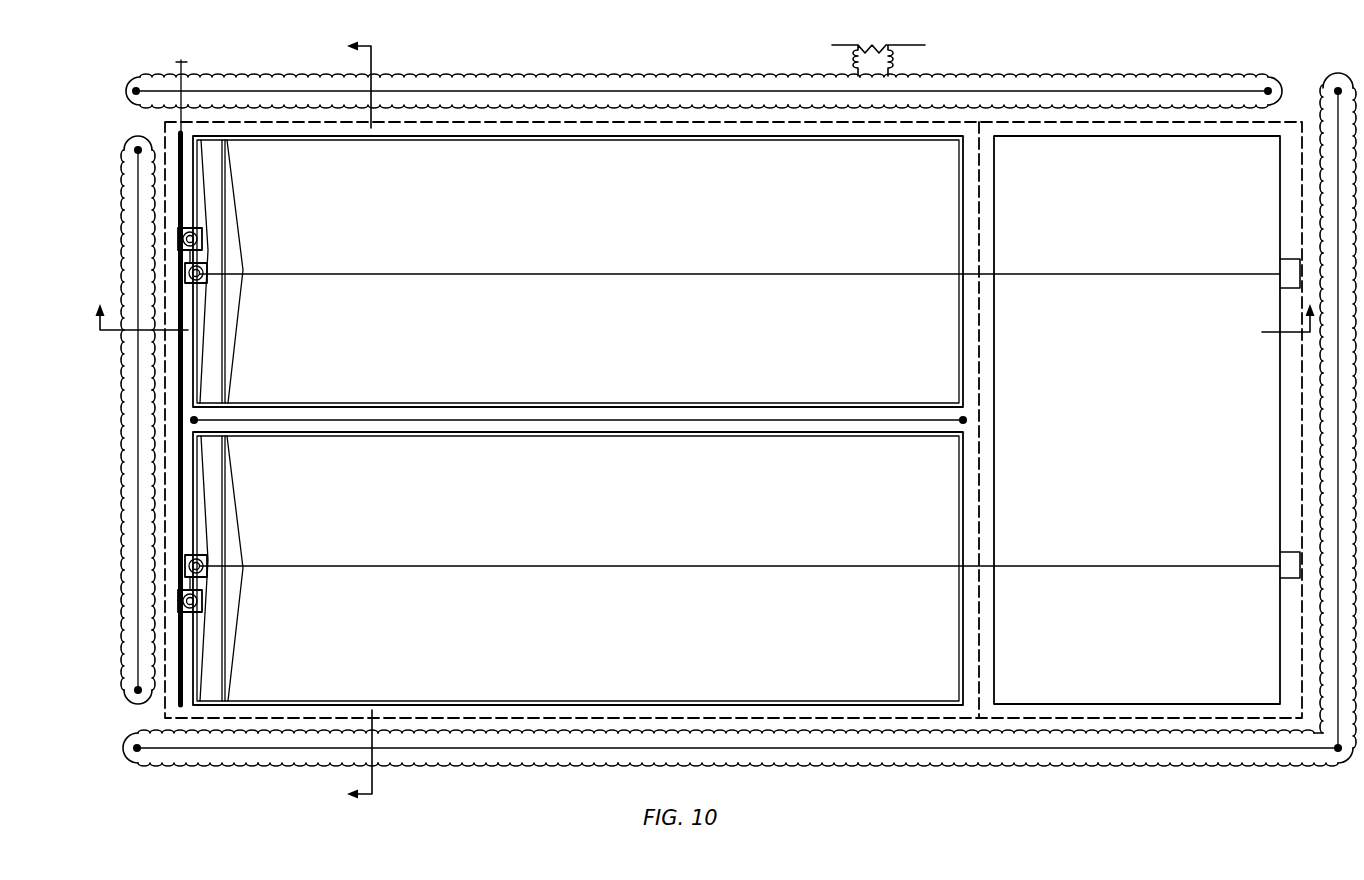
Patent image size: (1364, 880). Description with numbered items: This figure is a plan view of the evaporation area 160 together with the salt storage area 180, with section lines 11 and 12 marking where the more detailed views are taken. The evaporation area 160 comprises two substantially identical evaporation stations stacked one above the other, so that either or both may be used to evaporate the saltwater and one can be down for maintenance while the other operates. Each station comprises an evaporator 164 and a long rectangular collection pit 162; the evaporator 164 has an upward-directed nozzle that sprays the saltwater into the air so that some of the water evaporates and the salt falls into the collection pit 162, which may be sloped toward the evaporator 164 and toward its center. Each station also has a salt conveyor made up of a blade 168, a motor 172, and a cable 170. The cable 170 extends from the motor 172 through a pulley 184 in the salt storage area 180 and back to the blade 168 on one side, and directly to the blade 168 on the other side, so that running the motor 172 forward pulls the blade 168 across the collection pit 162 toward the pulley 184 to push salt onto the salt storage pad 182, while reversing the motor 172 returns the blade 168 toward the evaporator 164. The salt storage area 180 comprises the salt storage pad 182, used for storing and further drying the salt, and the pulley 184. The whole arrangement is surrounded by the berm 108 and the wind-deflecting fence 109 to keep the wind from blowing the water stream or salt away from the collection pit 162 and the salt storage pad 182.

The berm 108 is at (627, 77).
The wind-deflecting fence 109 is at (968, 90).
The evaporation area 160 is at (473, 122).
The collection pit 162 is at (690, 240).
The evaporator 164 is at (203, 237).
The blade 168 is at (232, 318).
The cable 170 is at (384, 274).
The motor 172 is at (208, 270).
The salt storage area 180 is at (1113, 121).
The salt storage pad 182 is at (1117, 230).
The pulley 184 is at (1293, 266).
The section line 11 is at (345, 423).
The section line 12 is at (703, 314).